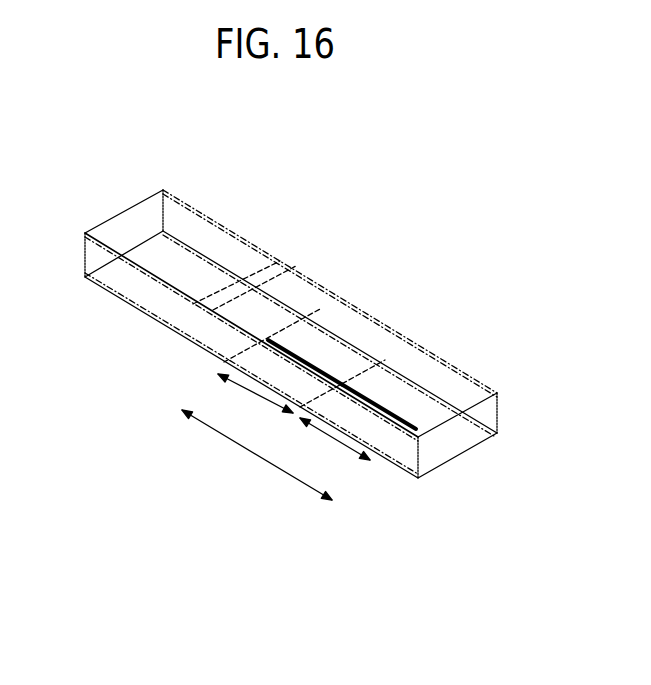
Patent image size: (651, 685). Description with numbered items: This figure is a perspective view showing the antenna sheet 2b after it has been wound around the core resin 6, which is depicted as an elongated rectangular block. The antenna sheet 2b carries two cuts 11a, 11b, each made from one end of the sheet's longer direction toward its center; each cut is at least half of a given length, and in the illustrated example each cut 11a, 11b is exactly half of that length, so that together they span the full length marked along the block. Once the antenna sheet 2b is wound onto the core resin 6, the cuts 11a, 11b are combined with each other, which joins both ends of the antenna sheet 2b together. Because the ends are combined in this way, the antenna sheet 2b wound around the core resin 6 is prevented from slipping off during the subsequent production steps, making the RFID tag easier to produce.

The antenna sheet 2b is at (412, 218).
The core resin 6 is at (118, 283).
The cut 11a is at (388, 408).
The cut 11b is at (312, 363).